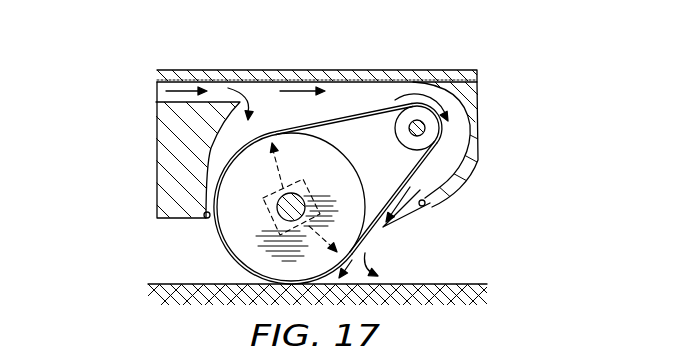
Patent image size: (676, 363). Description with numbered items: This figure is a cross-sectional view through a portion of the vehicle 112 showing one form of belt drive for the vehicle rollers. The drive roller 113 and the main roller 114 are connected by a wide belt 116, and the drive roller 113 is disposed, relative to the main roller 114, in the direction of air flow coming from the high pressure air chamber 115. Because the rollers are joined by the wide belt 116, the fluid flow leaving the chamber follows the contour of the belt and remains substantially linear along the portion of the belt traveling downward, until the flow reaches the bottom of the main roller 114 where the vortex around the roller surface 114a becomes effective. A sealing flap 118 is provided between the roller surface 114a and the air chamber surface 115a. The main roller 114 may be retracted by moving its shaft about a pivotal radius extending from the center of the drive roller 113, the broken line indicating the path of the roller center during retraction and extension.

The vehicle 112 is at (430, 76).
The drive roller 113 is at (432, 142).
The main roller 114 is at (255, 236).
The roller surface 114a is at (331, 120).
The high pressure air chamber 115 is at (255, 92).
The air chamber surface 115a is at (212, 163).
The wide belt 116 is at (417, 182).
The sealing flap 118 is at (213, 225).